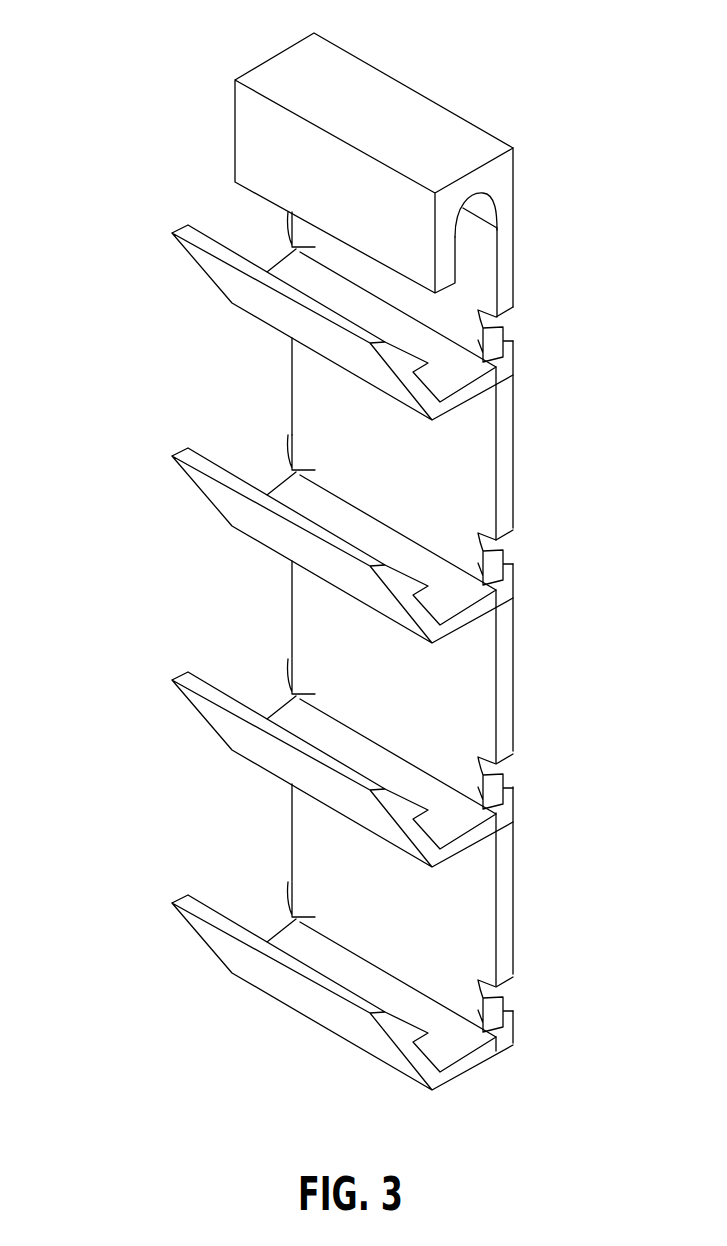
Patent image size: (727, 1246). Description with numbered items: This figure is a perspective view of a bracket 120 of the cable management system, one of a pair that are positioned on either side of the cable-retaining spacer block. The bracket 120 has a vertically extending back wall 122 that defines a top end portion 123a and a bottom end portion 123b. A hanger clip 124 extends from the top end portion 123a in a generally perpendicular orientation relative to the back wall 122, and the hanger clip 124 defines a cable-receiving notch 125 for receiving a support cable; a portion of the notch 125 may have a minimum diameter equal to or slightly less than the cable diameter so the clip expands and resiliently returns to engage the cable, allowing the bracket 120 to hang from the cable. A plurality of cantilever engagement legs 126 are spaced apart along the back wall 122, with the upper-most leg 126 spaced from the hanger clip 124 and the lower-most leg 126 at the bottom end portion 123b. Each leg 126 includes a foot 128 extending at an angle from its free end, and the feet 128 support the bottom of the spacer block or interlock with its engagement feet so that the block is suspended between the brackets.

The bracket 120 is at (480, 56).
The back wall 122 is at (483, 462).
The top end portion 123a is at (497, 285).
The bottom end portion 123b is at (505, 960).
The hanger clip 124 is at (451, 130).
The cable-receiving notch 125 is at (487, 212).
The cantilever engagement leg 126 is at (478, 397).
The foot 128 is at (178, 452).